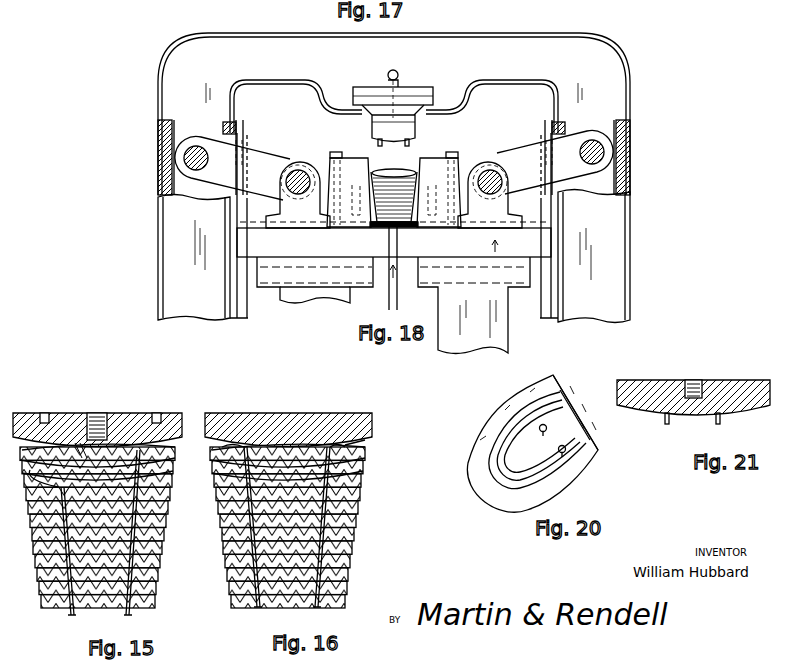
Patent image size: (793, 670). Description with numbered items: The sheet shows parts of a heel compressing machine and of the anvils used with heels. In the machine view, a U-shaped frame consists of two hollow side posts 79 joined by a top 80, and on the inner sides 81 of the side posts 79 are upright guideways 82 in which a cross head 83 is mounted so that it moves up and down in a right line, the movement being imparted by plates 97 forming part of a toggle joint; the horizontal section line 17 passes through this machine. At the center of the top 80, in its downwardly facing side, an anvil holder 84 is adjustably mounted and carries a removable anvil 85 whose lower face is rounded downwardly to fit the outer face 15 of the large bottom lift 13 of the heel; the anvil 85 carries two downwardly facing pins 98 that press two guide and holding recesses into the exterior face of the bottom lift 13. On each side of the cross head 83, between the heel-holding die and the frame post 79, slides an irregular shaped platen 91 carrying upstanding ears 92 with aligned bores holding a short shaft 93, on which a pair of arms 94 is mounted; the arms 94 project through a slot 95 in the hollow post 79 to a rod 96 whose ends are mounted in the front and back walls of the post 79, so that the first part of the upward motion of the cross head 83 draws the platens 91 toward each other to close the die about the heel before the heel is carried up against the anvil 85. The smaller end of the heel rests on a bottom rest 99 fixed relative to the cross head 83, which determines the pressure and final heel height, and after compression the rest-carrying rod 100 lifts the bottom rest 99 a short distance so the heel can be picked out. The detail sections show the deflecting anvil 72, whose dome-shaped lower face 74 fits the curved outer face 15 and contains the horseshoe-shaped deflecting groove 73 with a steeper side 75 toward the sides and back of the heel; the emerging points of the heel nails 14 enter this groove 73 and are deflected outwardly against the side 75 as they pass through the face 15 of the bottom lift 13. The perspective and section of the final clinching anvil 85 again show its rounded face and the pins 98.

In FIG. 15, the bottom lift 13 is at (148, 603).
In FIG. 16, the bottom lift 13 is at (248, 607).
In FIG. 15, the heel nails 14 is at (72, 618).
In FIG. 16, the heel nails 14 is at (250, 560).
In FIG. 15, the outer face of bottom lift 15 is at (113, 437).
In FIG. 16, the outer face of bottom lift 15 is at (290, 445).
In FIG. 18, the section line 17— 17 is at (656, 135).
In FIG. 15, the deflecting anvil 72 is at (55, 415).
In FIG. 16, the deflecting anvil 72 is at (265, 420).
In FIG. 15, the deflecting groove 73 is at (143, 447).
In FIG. 16, the deflecting groove 73 is at (330, 445).
In FIG. 15, the lower face of anvil 74 is at (127, 447).
In FIG. 16, the lower face of anvil 74 is at (310, 447).
In FIG. 16, the steeper side of recess 75 is at (357, 440).
In FIG. 18, the side posts 79 is at (158, 266).
In FIG. 18, the top 80 is at (538, 47).
In FIG. 18, the inner sides of side posts 81 is at (240, 319).
In FIG. 18, the guideways 82 is at (235, 291).
In FIG. 18, the cross head 83 is at (394, 239).
In FIG. 18, the anvil holder 84 is at (422, 97).
In FIG. 18, the anvil 85 is at (407, 123).
In FIG. 20, the anvil 85 is at (563, 394).
In FIG. 21, the anvil 85 is at (726, 380).
In FIG. 18, the platens 91 is at (307, 220).
In FIG. 18, the ears 92 is at (306, 168).
In FIG. 18, the short shaft 93 is at (298, 170).
In FIG. 18, the arms 94 is at (240, 158).
In FIG. 18, the slot 95 is at (242, 128).
In FIG. 18, the rod 96 is at (183, 154).
In FIG. 18, the plates 97 is at (312, 295).
In FIG. 18, the pins 98 is at (409, 141).
In FIG. 20, the pins 98 is at (590, 466).
In FIG. 21, the pins 98 is at (667, 425).
In FIG. 18, the bottom rest 99 is at (407, 228).
In FIG. 18, the rest-carrying rod 100 is at (398, 297).